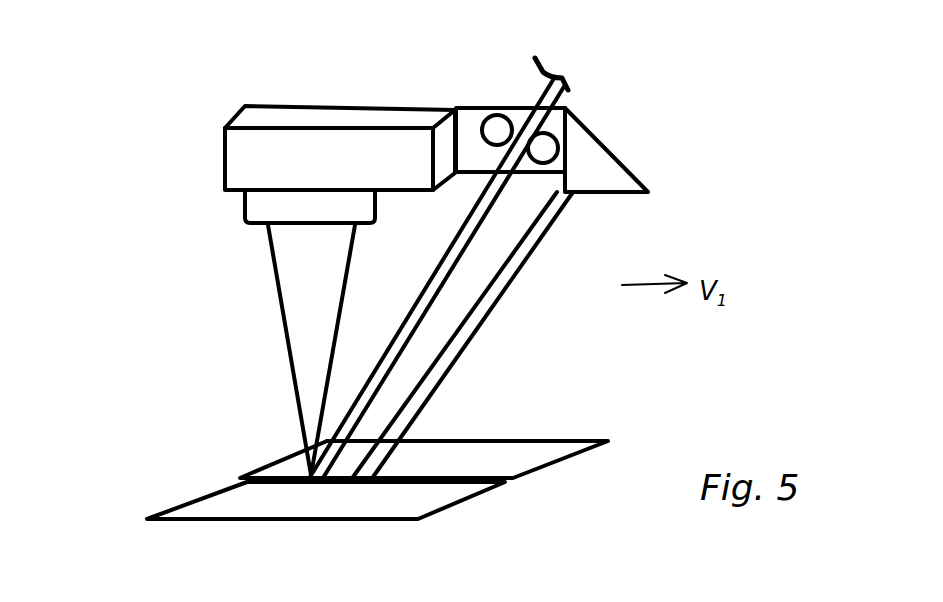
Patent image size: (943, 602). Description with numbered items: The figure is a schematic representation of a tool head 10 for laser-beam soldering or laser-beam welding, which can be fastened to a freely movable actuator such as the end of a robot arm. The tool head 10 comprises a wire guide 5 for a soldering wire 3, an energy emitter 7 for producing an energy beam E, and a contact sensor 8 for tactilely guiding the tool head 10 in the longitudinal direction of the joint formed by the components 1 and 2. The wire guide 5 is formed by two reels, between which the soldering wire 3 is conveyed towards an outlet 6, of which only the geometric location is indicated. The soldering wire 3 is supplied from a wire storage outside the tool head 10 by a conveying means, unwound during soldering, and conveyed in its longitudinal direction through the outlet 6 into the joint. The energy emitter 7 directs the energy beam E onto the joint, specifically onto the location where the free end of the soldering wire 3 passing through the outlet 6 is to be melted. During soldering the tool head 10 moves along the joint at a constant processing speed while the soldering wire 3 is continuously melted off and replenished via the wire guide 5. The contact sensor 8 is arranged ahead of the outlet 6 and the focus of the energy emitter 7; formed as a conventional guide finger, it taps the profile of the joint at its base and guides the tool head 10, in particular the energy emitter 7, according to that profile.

The component 1 is at (567, 440).
The component 2 is at (457, 507).
The soldering wire 3 is at (562, 105).
The wire guide 5 is at (545, 148).
The outlet 6 is at (431, 336).
The energy emitter 7 is at (238, 167).
The contact sensor 8 is at (413, 442).
The tool head 10 is at (108, 58).
The energy beam E is at (297, 307).